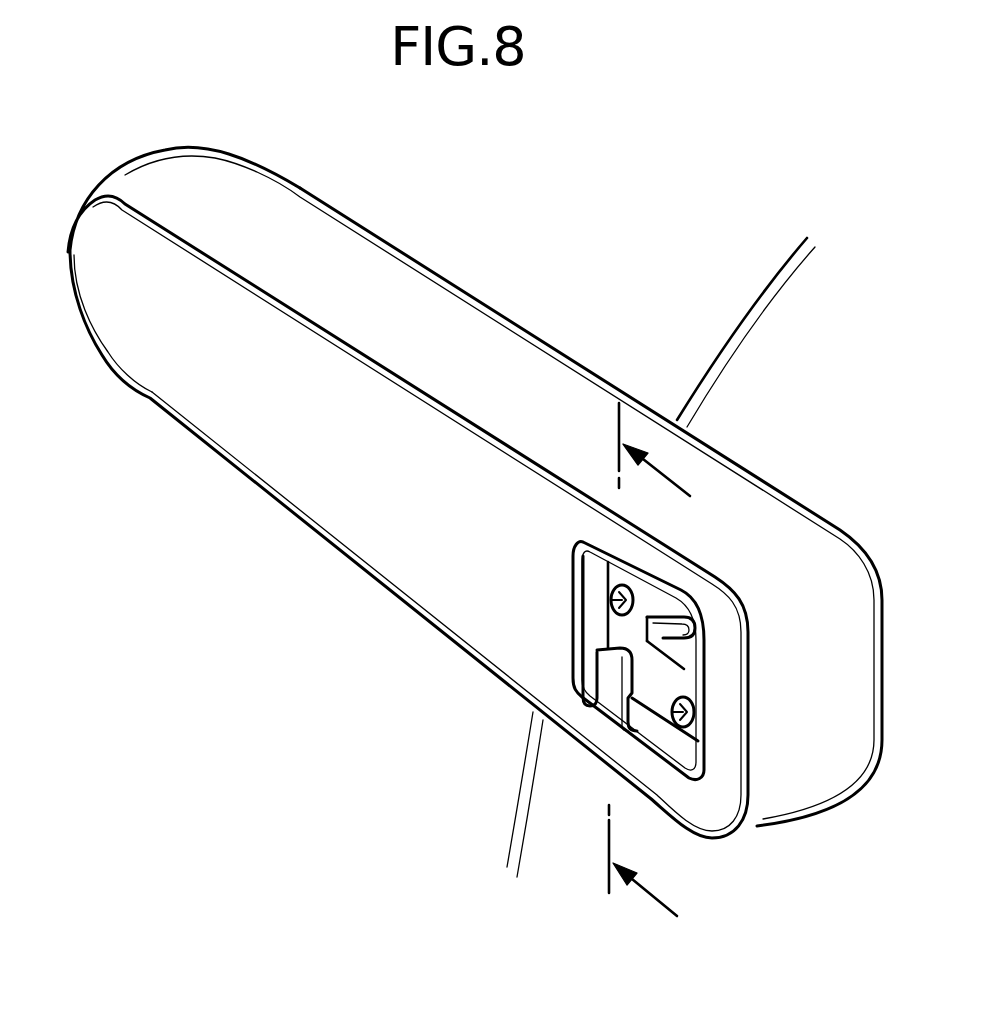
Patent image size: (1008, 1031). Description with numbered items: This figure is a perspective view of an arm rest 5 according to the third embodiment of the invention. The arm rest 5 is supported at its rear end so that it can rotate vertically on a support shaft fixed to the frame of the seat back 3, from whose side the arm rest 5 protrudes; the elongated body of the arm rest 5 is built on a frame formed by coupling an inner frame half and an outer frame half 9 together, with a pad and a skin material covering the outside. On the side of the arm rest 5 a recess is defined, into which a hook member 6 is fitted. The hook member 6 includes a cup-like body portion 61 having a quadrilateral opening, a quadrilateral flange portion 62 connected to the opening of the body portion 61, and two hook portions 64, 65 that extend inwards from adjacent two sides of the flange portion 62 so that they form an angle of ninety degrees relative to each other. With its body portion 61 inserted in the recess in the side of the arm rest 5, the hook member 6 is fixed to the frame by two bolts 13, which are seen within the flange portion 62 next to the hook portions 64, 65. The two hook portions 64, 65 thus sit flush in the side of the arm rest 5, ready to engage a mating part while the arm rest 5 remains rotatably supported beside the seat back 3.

The seat back 3 is at (784, 347).
The arm rest 5 is at (433, 268).
The hook member 6 is at (565, 567).
The outer frame half 9 is at (664, 674).
The bolt 13 is at (630, 590).
The body portion 61 is at (663, 690).
The flange portion 62 is at (573, 607).
The hook portion 64 is at (605, 665).
The hook portion 65 is at (665, 638).